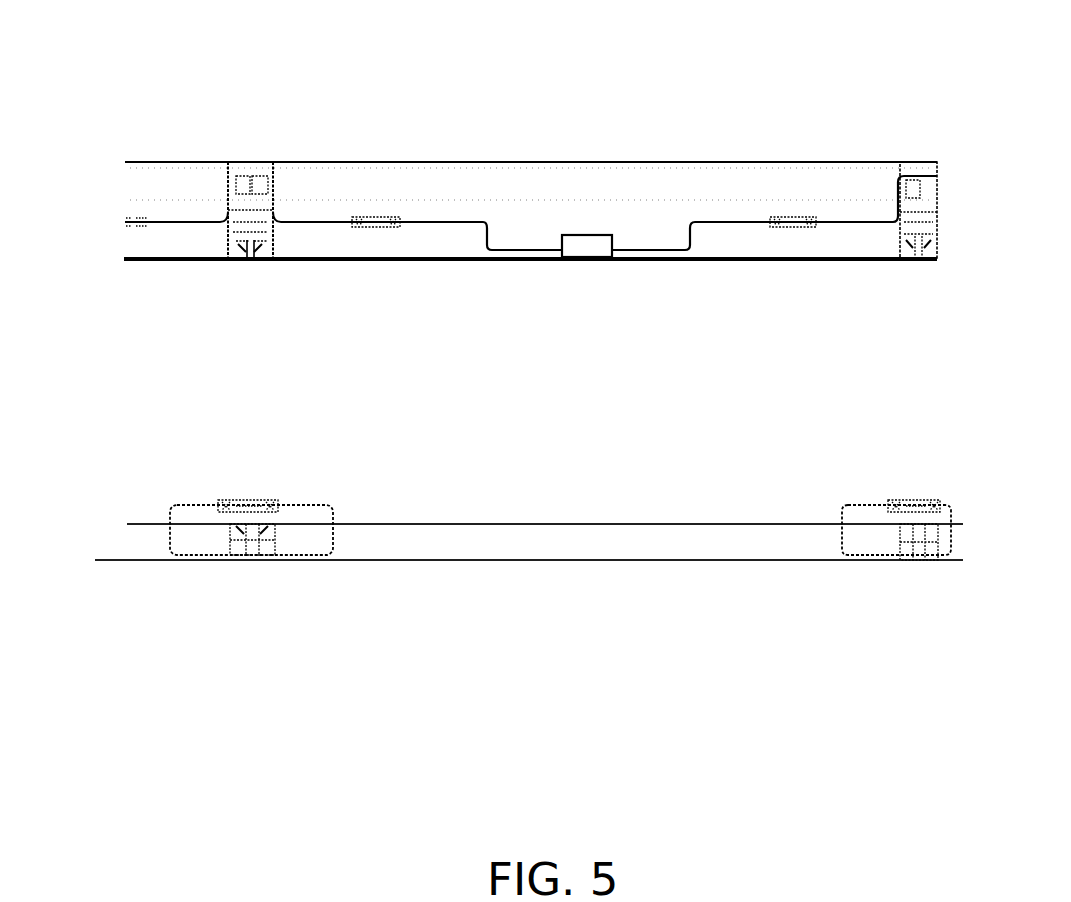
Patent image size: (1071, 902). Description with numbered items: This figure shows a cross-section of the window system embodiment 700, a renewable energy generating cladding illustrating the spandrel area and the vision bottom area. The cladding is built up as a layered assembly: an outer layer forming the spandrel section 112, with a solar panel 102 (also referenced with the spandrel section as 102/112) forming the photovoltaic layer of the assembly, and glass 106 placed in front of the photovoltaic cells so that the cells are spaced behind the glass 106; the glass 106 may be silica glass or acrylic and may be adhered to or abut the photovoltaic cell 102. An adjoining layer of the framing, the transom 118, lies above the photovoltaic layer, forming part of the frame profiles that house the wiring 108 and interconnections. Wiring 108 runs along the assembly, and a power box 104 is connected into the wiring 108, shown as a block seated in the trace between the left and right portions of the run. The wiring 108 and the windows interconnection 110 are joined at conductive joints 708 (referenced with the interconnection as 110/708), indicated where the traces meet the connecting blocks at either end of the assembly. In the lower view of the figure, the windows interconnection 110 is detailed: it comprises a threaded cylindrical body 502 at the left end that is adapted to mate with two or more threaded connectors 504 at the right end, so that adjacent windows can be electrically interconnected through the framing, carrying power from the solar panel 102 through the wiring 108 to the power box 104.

The display assembly cross-section 700 is at (153, 83).
The spandrel section 112 is at (548, 78).
The transom 118 is at (620, 186).
The windows interconnection 110 is at (357, 226).
The conductive joint 708 is at (798, 222).
The wiring 108 is at (727, 222).
The power box 104 is at (582, 250).
The solar panel 102 is at (445, 262).
The glass 106 is at (585, 456).
The threaded cylindrical body 502 is at (240, 508).
The threaded connectors 504 is at (890, 508).